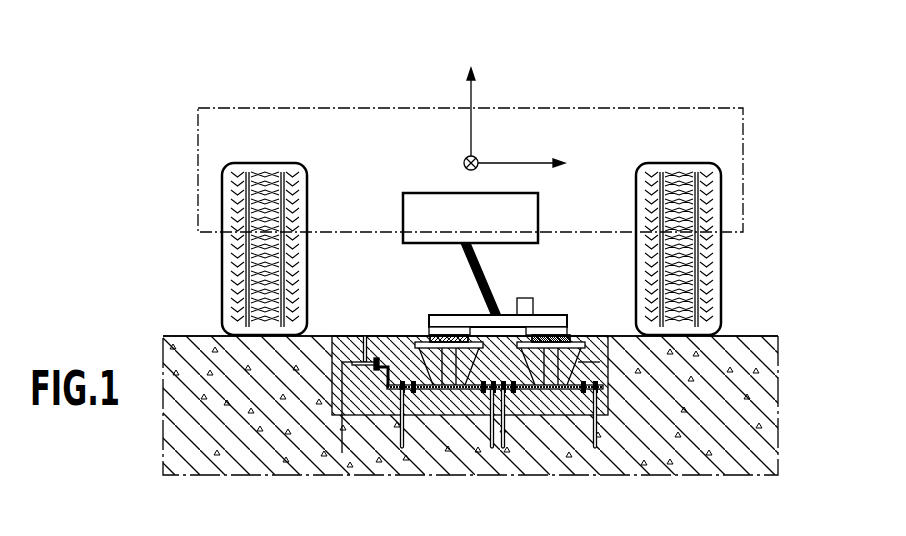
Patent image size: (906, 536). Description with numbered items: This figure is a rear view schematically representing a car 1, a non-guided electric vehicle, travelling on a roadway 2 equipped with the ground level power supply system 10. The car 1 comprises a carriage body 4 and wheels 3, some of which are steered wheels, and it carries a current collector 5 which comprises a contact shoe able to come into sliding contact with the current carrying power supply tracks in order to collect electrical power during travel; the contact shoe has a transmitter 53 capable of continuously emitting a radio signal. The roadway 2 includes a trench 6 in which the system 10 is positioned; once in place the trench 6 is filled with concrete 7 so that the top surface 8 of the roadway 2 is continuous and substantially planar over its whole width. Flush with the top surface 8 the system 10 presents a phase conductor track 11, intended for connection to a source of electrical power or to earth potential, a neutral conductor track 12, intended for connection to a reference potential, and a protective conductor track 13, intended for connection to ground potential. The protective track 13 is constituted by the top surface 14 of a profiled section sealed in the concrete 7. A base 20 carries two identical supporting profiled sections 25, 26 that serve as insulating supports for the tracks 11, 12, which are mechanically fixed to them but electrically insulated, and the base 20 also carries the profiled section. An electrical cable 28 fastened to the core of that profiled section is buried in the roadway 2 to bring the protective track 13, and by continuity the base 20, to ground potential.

The car 1 is at (482, 170).
The roadway 2 is at (780, 413).
The wheels 3 is at (233, 272).
The carriage body 4 is at (743, 135).
The current collector 5 is at (494, 286).
The transmitter 53 is at (531, 305).
The trench 6 is at (475, 400).
The concrete 7 is at (373, 395).
The top surface 8 is at (752, 335).
The ground level power supply system 10 is at (447, 366).
The phase conductor track 11 is at (430, 316).
The neutral conductor track 12 is at (576, 338).
The protective conductor track 13 is at (366, 337).
The top surface of profiled section 14 is at (355, 347).
The base 20 is at (545, 390).
The supporting profiled section 25 is at (468, 370).
The supporting profiled section 26 is at (600, 362).
The electrical cable 28 is at (340, 437).